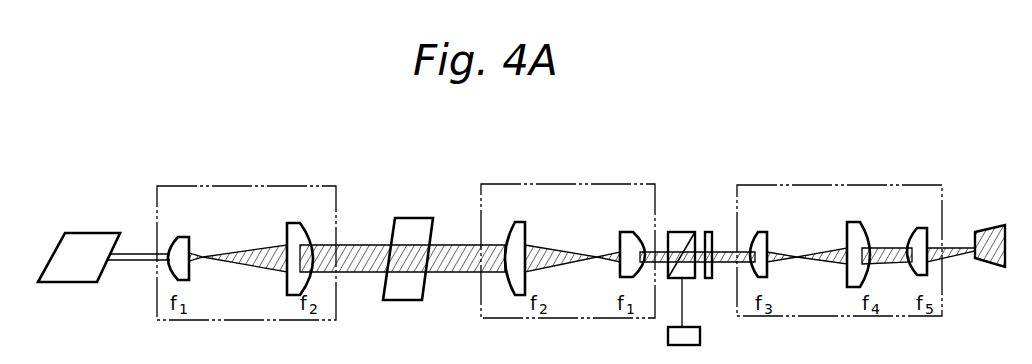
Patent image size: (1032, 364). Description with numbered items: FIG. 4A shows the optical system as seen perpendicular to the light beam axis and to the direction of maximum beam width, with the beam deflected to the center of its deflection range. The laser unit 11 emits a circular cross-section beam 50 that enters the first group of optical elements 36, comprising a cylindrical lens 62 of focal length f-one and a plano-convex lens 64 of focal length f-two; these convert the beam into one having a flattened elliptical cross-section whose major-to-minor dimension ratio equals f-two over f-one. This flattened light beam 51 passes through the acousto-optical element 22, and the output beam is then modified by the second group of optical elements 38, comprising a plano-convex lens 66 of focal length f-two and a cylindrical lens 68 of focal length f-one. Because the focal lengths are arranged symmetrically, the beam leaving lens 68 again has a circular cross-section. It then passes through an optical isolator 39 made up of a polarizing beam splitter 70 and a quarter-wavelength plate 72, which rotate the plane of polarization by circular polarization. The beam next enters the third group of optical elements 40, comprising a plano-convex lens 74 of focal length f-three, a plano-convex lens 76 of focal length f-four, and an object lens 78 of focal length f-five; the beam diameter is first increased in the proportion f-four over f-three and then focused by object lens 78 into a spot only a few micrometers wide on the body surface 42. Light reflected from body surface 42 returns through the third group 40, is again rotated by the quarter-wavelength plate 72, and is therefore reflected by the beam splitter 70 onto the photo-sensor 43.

The laser unit 11 is at (87, 238).
The circular cross-section beam 50 is at (133, 263).
The cylindrical lens 62 is at (182, 243).
The plano-convex lens 64 is at (298, 233).
The first group of optical elements 36 is at (257, 183).
The acousto-optical element 22 is at (413, 223).
The light beam 51 is at (455, 278).
The second group of optical elements 38 is at (588, 182).
The plano-convex lens 66 is at (522, 222).
The cylindrical lens 68 is at (632, 232).
The optical isolator 39 is at (700, 201).
The polarizing beam splitter 70 is at (677, 232).
The quarter wavelength plate 72 is at (710, 232).
The photo-sensor 43 is at (700, 336).
The third group of optical elements 40 is at (850, 183).
The plano-convex lens 74 is at (765, 230).
The plano-convex lens 76 is at (860, 222).
The object lens 78 is at (918, 227).
The body surface 42 is at (992, 227).